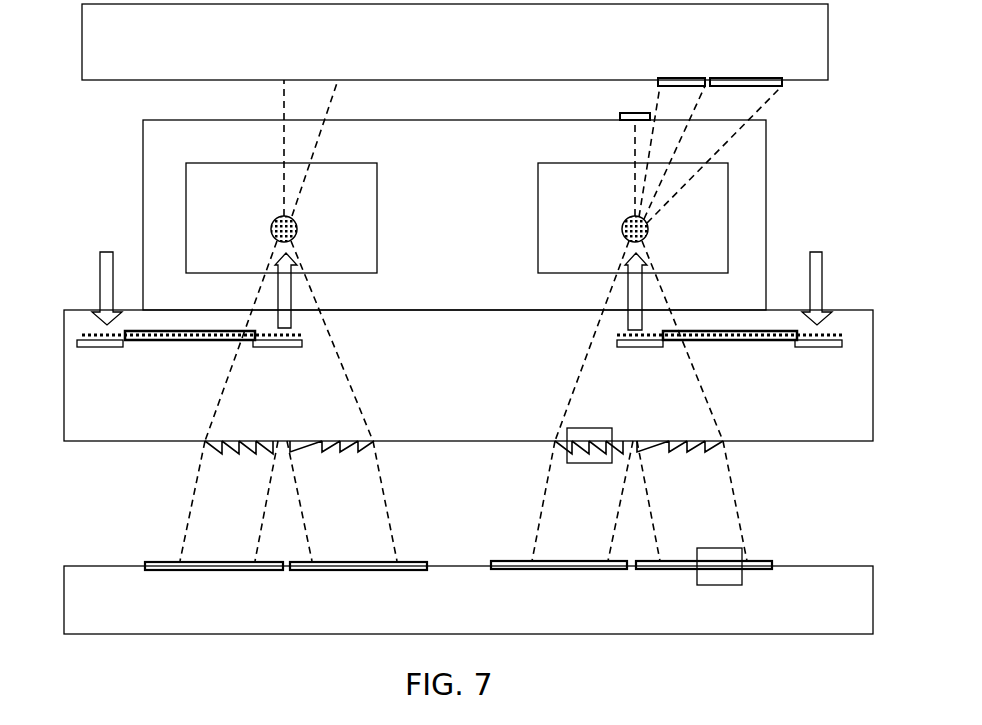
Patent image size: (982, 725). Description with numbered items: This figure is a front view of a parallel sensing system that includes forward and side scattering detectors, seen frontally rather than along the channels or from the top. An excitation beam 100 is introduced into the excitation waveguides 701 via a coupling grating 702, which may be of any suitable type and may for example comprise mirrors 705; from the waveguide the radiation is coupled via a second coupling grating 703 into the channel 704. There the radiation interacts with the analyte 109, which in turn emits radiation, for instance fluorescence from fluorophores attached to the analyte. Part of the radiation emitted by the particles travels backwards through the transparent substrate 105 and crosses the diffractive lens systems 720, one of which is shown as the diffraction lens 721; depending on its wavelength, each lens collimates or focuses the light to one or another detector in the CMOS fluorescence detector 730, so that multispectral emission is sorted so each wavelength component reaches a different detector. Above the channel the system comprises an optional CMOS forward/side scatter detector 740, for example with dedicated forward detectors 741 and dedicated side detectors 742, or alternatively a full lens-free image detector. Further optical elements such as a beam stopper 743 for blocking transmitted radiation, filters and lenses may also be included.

The excitation beam 100 is at (106, 250).
The transparent substrate 105 is at (857, 430).
The analyte 109 is at (623, 227).
The excitation waveguide 701 is at (190, 341).
The coupling grating 702 is at (833, 333).
The second coupling grating 703 is at (625, 336).
The channel 704 is at (714, 258).
The mirrors 705 is at (267, 345).
The diffractive lens systems 720 is at (531, 469).
The diffraction lens 721 is at (590, 427).
The CMOS fluorescence detector 730 is at (487, 625).
The CMOS forward/side scatter detector 740 is at (480, 48).
The forward detectors 741 is at (683, 79).
The side detectors 742 is at (748, 78).
The beam stopper 743 is at (620, 115).